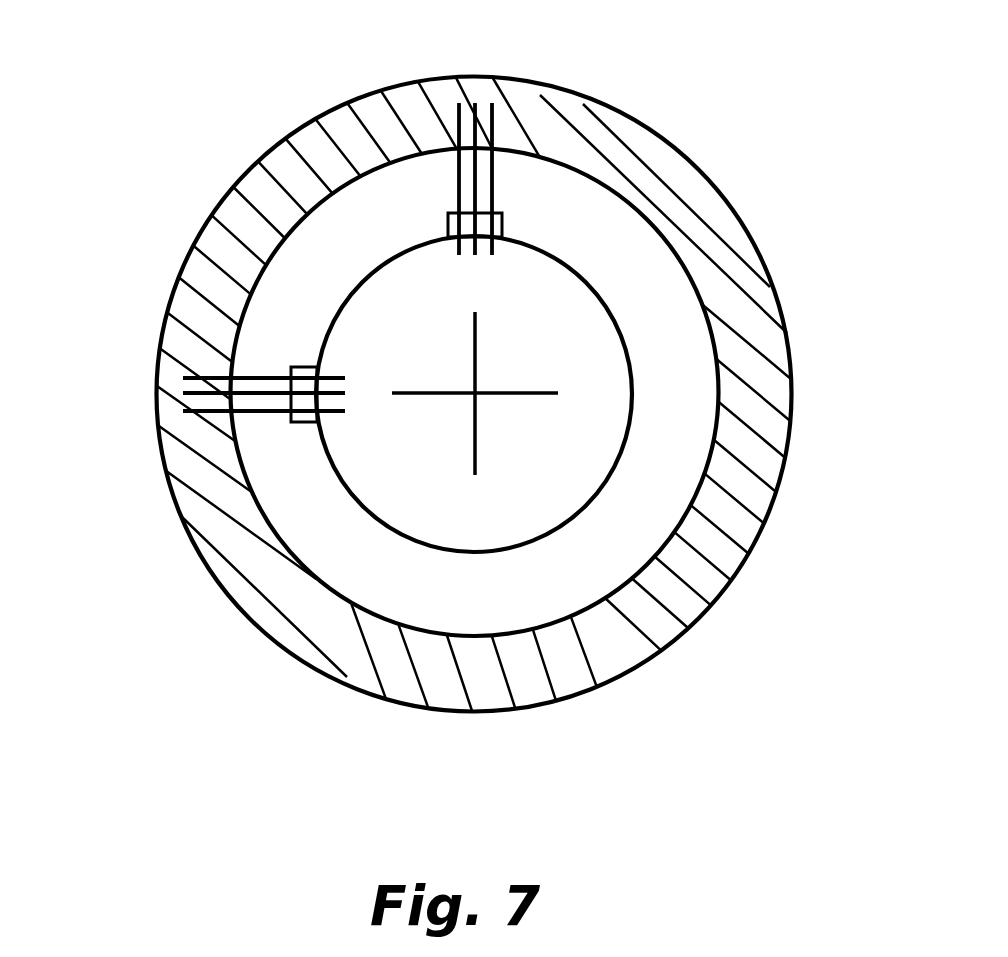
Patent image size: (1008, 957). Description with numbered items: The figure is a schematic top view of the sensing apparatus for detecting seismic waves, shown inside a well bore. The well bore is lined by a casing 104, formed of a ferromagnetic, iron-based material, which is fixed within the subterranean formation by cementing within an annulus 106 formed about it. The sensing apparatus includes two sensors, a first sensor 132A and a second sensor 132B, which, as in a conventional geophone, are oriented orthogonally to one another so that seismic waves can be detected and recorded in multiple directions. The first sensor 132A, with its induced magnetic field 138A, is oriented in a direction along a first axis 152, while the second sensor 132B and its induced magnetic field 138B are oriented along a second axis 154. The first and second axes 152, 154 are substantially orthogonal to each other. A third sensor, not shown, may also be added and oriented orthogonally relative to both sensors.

The casing 104 is at (682, 632).
The annulus 106 is at (620, 328).
The sensor 132A is at (502, 223).
The second sensor 132B is at (305, 422).
The induced magnetic field 138A is at (455, 180).
The induced magnetic field 138B is at (263, 372).
The first axis 152 is at (477, 348).
The second axis 154 is at (535, 395).